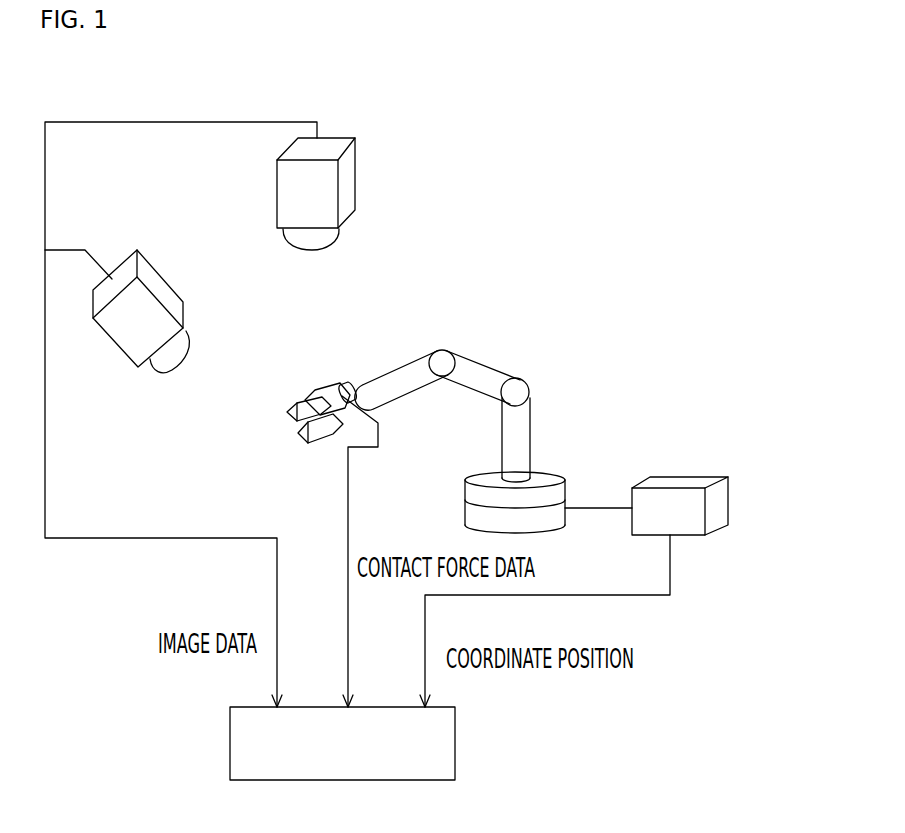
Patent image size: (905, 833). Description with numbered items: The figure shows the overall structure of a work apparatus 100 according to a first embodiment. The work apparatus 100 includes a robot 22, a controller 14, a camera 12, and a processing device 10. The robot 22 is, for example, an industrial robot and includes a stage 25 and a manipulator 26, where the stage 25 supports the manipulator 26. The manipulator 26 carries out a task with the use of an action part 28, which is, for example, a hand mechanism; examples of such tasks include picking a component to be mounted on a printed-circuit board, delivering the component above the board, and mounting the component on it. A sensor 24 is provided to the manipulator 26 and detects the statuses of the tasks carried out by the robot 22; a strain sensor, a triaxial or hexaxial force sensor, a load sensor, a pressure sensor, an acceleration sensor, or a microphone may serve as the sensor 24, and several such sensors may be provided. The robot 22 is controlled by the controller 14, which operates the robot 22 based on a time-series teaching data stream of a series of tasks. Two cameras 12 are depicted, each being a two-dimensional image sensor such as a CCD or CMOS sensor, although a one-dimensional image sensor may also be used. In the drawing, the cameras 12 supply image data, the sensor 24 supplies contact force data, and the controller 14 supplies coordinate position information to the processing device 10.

The work apparatus 100 is at (607, 195).
The camera 12 is at (355, 185).
The robot 22 is at (492, 350).
The manipulator 26 is at (405, 368).
The stage 25 is at (550, 475).
The sensor 24 is at (338, 393).
The action part 28 is at (302, 405).
The controller 14 is at (690, 483).
The processing device 10 is at (380, 707).